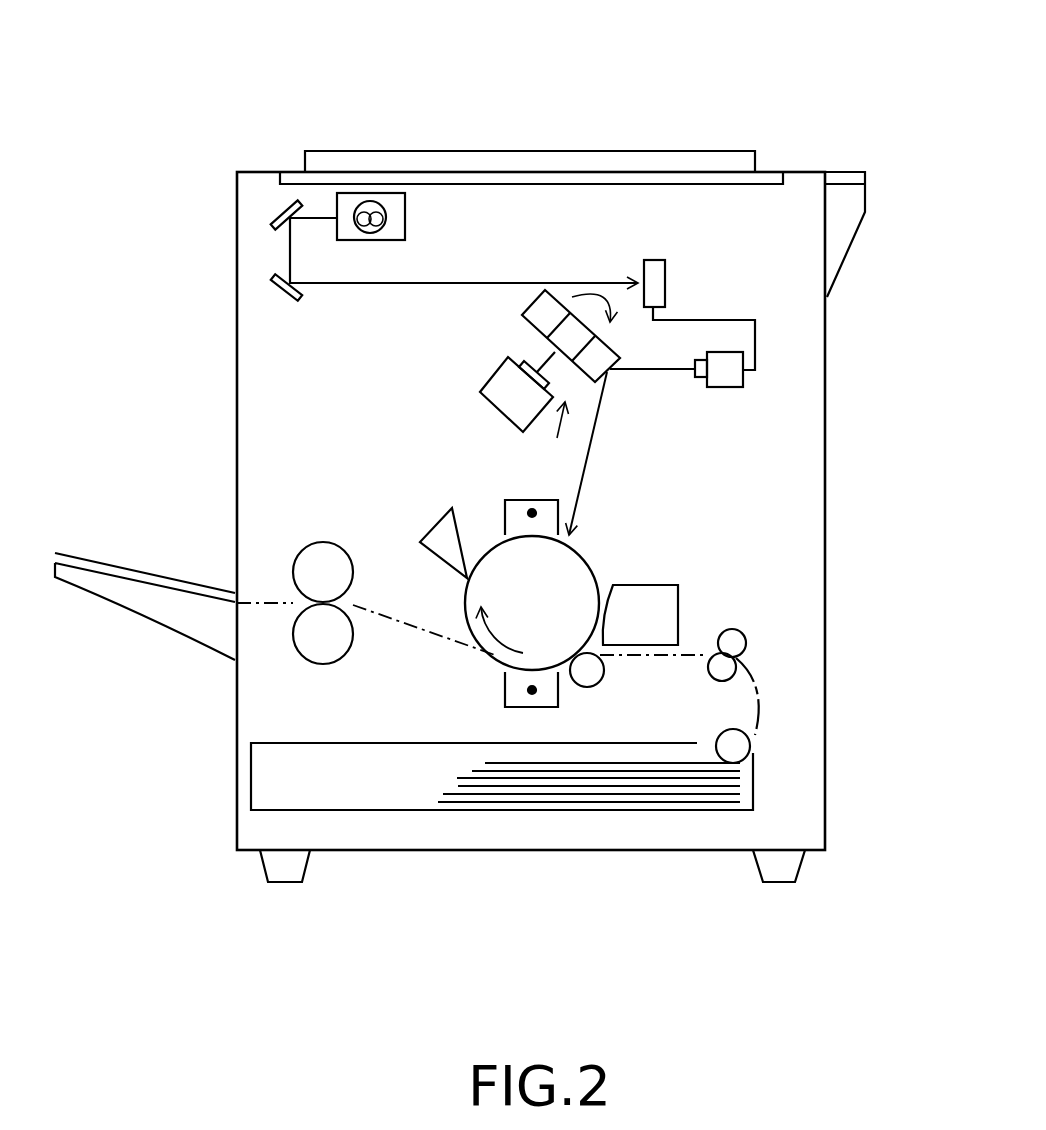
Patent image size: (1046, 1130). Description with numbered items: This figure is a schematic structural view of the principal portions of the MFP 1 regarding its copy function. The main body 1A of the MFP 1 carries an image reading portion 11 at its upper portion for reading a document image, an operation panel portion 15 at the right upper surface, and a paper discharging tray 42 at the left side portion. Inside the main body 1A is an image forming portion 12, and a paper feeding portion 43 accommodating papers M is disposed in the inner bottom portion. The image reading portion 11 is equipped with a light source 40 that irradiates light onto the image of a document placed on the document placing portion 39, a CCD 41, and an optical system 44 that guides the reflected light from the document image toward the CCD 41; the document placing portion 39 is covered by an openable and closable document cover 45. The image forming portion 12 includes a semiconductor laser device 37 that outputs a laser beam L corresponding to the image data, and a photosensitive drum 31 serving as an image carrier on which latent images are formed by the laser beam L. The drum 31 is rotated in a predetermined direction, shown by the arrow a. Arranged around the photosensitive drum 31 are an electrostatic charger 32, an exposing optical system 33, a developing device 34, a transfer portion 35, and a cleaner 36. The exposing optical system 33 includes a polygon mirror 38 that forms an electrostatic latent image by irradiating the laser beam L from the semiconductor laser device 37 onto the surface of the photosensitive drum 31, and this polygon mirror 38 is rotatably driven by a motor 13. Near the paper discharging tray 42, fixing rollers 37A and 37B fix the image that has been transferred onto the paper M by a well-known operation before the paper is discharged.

The MFP 1 is at (215, 230).
The main body 1A is at (832, 457).
The image reading portion 11 is at (327, 207).
The image forming portion 12 is at (722, 575).
The motor 13 is at (498, 377).
The operation panel portion 15 is at (845, 178).
The photosensitive drum 31 is at (590, 567).
The electrostatic charger 32 is at (520, 498).
The exposing optical system 33 is at (556, 441).
The developing device 34 is at (660, 612).
The transfer portion 35 is at (505, 685).
The cleaner 36 is at (447, 512).
The semiconductor laser device 37 is at (740, 372).
The fixing roller 37A is at (308, 562).
The fixing roller 37B is at (310, 638).
The polygon mirror 38 is at (532, 302).
The document placing portion 39 is at (653, 178).
The light source 40 is at (378, 233).
The CCD 41 is at (665, 281).
The paper discharging tray 42 is at (165, 608).
The paper feeding portion 43 is at (470, 810).
The optical system 44 is at (280, 250).
The document cover 45 is at (540, 163).
The paper M is at (148, 573).
The laser beam L is at (587, 463).
The arrow a is at (543, 648).